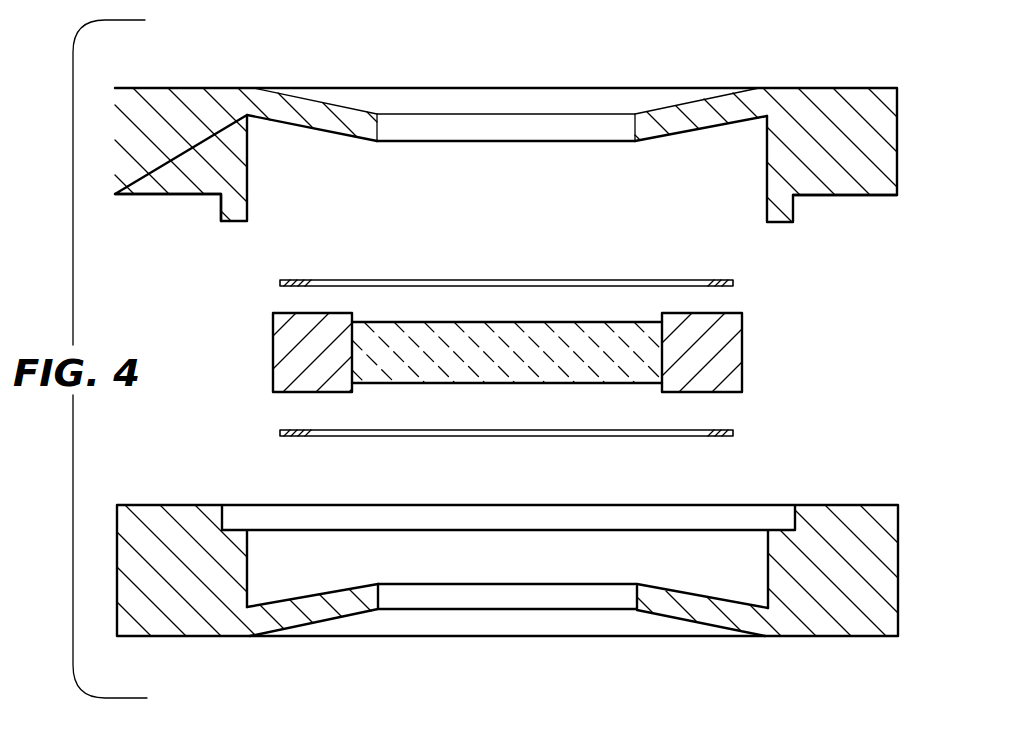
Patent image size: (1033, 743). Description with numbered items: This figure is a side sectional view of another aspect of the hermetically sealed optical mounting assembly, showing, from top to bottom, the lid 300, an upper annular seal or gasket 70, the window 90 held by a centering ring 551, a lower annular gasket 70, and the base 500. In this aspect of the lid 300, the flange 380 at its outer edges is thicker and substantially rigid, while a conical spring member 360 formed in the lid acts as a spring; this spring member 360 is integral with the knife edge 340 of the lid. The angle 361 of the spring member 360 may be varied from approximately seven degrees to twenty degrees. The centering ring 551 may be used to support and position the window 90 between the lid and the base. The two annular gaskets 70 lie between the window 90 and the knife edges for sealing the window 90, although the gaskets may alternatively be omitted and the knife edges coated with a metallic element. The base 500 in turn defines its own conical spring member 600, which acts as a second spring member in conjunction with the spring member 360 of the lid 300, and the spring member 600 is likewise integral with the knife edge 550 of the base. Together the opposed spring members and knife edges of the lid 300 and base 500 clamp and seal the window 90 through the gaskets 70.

The lid 300 is at (826, 76).
The conical spring member 360 is at (295, 103).
The angle of the spring member 361 is at (350, 88).
The knife edge 340 is at (377, 142).
The flange 380 is at (155, 188).
The annular seal or gasket 70 is at (733, 284).
The centering ring 551 is at (280, 345).
The window 90 is at (500, 375).
The base 500 is at (840, 619).
The knife edge 550 is at (378, 584).
The conical spring member 600 is at (323, 608).